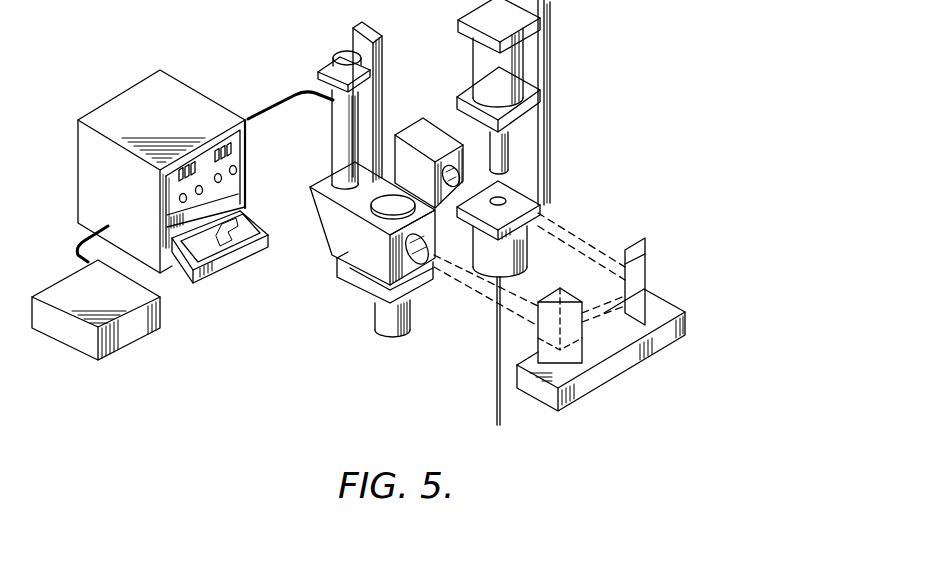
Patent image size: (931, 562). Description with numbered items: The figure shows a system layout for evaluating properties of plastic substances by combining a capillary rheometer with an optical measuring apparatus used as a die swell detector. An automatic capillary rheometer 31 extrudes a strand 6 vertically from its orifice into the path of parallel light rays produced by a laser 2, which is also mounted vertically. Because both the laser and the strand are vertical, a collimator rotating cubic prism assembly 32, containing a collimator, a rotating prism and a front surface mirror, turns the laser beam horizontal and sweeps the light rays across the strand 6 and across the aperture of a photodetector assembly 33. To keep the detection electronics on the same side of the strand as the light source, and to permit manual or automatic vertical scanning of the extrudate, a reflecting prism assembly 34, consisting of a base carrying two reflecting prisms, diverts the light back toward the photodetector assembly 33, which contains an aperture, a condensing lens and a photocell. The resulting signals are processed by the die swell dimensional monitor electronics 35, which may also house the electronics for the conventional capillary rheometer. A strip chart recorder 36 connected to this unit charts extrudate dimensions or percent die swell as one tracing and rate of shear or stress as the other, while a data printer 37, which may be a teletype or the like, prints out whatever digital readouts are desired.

The laser 2 is at (342, 53).
The strand 6 is at (497, 356).
The automatic capillary rheometer 31 is at (550, 72).
The collimator rotating cubic prism assembly 32 is at (385, 333).
The photodetector assembly 33 is at (433, 117).
The reflecting prism assembly 34 is at (677, 302).
The die swell dimensional monitor electronics 35 is at (205, 130).
The strip chart recorder 36 is at (232, 264).
The data printer 37 is at (128, 333).